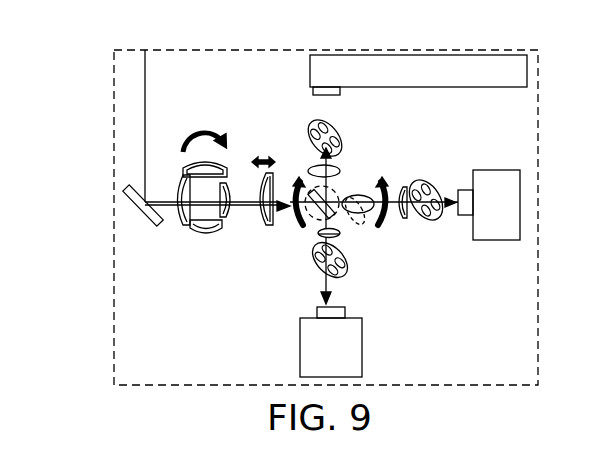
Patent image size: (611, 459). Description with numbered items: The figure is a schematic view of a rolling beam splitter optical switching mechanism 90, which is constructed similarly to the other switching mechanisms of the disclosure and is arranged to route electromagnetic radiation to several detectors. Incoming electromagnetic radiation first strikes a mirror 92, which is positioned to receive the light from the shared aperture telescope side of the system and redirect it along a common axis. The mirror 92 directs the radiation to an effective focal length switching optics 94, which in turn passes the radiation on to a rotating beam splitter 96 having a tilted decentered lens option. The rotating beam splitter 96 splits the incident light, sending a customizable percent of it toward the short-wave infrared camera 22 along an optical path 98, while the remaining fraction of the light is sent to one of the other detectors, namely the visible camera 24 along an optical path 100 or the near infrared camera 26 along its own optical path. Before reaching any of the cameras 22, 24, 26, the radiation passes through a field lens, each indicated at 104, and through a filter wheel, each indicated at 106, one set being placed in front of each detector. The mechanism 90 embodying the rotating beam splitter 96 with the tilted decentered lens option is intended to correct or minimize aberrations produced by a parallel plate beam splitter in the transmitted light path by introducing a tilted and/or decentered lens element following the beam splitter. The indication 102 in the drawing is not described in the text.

The short-wave infrared (SWIR) camera 22 is at (497, 235).
The visible (VIS) camera 24 is at (360, 347).
The near infrared (NIR) camera 26 is at (427, 85).
The rolling beam splitter optical switching mechanism 90 is at (203, 393).
The mirror 92 is at (146, 212).
The effective focal length (EFL) switching optics 94 is at (203, 235).
The rotating beam splitter 96 is at (327, 189).
The optical path 98 is at (243, 206).
The optical path 100 is at (325, 283).
The translation direction 102 is at (318, 168).
The field lens 104 is at (338, 168).
The filter wheel 106 is at (331, 128).